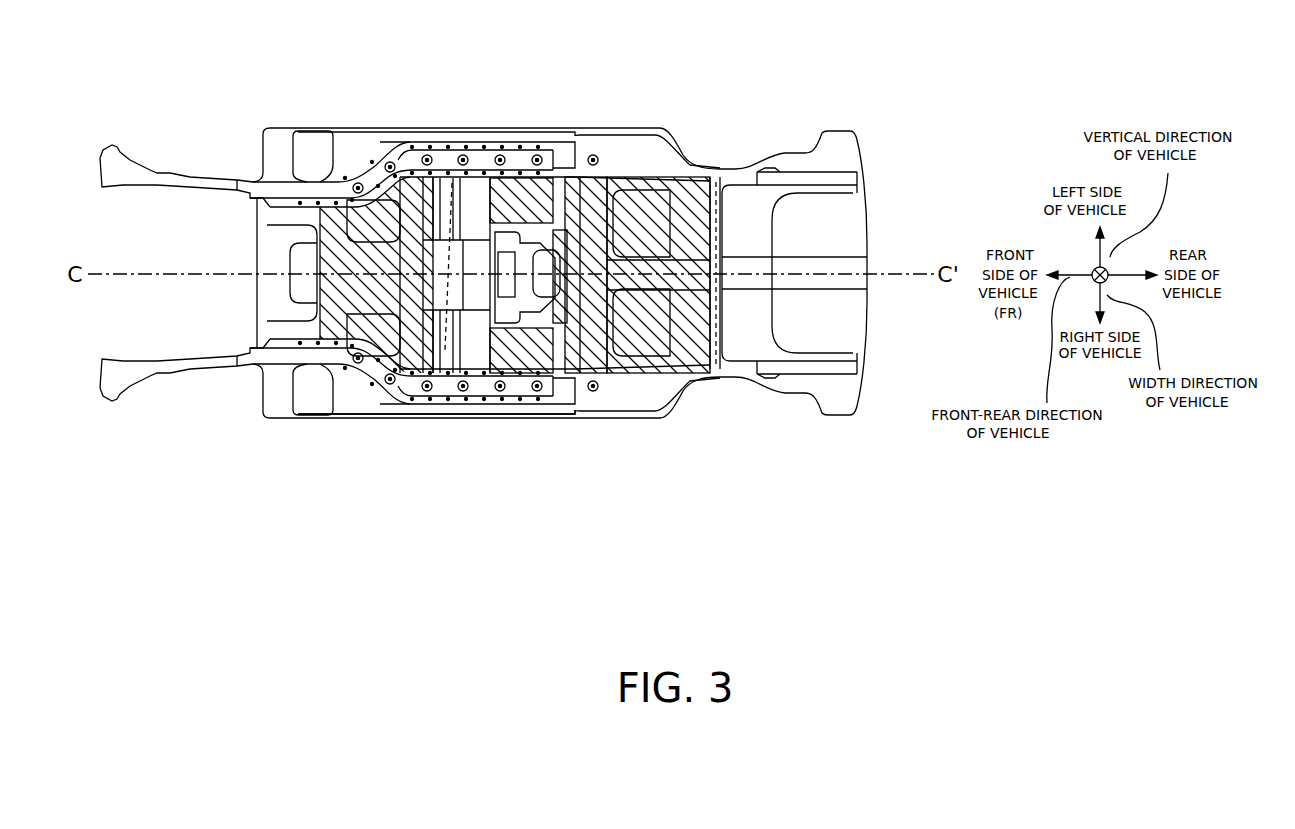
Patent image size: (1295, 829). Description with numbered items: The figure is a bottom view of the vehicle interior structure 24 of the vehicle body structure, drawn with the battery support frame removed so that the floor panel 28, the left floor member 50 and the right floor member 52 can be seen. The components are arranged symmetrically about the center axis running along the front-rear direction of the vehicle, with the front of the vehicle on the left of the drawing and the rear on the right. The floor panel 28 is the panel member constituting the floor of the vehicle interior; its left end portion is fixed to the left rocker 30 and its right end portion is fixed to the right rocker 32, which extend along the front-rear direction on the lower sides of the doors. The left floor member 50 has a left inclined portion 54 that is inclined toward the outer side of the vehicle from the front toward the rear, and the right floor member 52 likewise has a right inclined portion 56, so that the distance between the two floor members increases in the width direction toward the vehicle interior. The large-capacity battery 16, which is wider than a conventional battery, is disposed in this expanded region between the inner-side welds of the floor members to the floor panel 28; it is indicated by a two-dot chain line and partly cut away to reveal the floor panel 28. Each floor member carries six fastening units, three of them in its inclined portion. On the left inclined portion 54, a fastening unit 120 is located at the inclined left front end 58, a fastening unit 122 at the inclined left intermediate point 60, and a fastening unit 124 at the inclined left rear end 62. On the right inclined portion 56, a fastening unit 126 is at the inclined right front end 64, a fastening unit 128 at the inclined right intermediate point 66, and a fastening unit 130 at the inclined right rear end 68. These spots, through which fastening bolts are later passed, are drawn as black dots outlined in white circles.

The large-capacity battery 16 is at (655, 405).
The vehicle interior structure 24 is at (340, 400).
The floor panel 28 is at (486, 288).
The left rocker 30 is at (556, 135).
The right rocker 32 is at (557, 420).
The left floor member 50 is at (517, 148).
The right floor member 52 is at (522, 420).
The left inclined portion 54 is at (403, 140).
The right inclined portion 56 is at (402, 400).
The inclined left front end 58 is at (302, 128).
The inclined left intermediate point 60 is at (375, 128).
The inclined left rear end 62 is at (475, 112).
The inclined right front end 64 is at (302, 415).
The inclined right intermediate point 66 is at (375, 415).
The inclined right rear end 68 is at (475, 432).
The fastening unit 120 is at (318, 182).
The fastening unit 122 is at (385, 162).
The fastening unit 124 is at (437, 148).
The fastening unit 126 is at (317, 418).
The fastening unit 128 is at (380, 420).
The fastening unit 130 is at (442, 420).